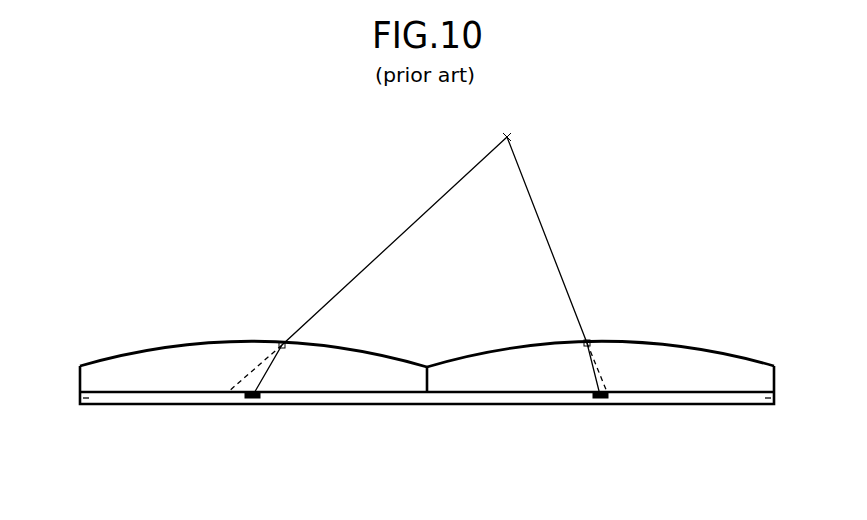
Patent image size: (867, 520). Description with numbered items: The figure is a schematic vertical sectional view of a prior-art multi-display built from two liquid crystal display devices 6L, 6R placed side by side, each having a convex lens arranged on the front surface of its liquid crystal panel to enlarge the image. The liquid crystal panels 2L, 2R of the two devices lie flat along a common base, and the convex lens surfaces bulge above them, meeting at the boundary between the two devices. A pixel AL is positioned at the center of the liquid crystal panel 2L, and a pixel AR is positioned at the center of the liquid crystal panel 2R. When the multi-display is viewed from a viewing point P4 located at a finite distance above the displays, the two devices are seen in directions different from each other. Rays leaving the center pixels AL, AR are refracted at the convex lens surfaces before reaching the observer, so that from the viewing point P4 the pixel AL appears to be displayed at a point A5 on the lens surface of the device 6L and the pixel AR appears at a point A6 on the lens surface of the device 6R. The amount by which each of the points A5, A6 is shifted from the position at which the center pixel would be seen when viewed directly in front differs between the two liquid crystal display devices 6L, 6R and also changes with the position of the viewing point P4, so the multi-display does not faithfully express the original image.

The liquid crystal display device 6L is at (107, 346).
The liquid crystal display device 6R is at (745, 345).
The liquid crystal panel 2L is at (80, 399).
The liquid crystal panel 2R is at (775, 399).
The viewing point P4 is at (504, 123).
The point A5 is at (281, 342).
The point A6 is at (588, 342).
The pixel AL is at (255, 405).
The pixel AR is at (600, 405).